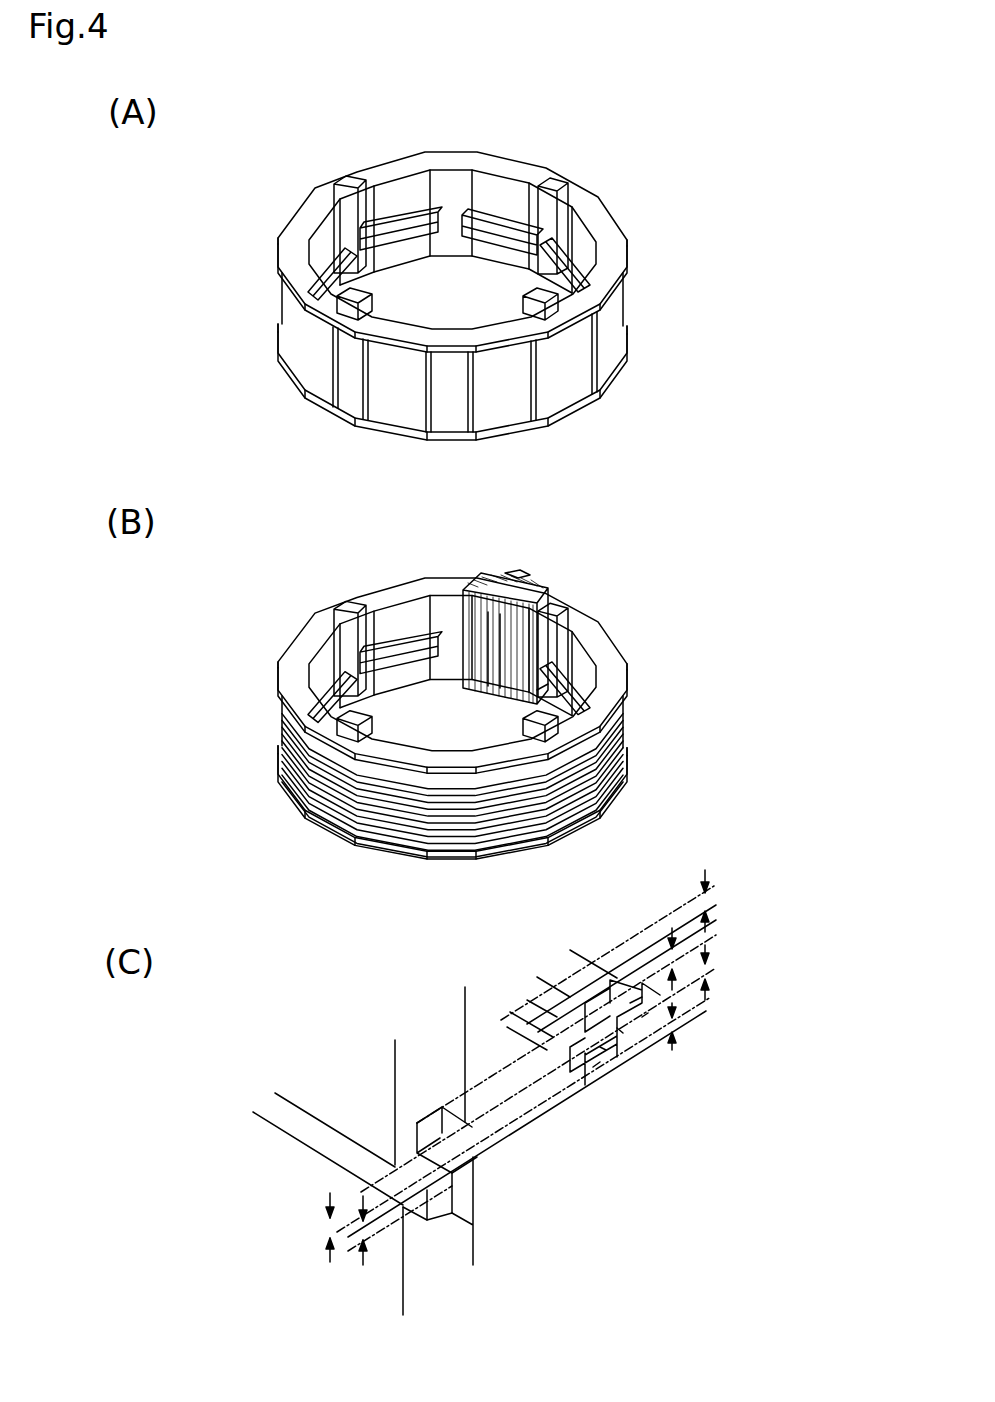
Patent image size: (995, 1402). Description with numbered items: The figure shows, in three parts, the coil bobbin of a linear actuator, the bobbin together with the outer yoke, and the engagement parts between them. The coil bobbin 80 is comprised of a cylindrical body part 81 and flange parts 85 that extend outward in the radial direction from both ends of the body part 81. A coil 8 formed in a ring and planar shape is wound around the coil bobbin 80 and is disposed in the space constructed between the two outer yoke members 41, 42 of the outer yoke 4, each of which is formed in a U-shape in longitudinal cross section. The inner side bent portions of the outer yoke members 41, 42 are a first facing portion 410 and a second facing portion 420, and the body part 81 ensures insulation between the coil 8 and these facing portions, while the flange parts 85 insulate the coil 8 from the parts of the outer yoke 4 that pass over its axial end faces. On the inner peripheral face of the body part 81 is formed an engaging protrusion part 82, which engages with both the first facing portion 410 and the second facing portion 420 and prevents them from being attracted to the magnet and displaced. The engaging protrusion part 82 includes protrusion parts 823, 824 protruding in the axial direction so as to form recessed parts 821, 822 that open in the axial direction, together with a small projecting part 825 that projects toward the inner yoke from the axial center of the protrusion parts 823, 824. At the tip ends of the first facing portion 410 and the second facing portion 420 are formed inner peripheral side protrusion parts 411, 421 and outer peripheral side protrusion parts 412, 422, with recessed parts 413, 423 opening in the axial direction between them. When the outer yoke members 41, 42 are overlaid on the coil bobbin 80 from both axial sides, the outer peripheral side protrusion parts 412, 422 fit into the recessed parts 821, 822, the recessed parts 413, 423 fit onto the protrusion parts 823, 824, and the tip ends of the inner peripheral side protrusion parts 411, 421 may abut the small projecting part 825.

The coil bobbin 80 is at (638, 216).
The flange parts 85 is at (630, 313).
The body part 81 is at (512, 371).
The engaging protrusion part 82 is at (535, 660).
The coil 8 is at (590, 788).
The outer yoke 4 is at (480, 899).
The outer yoke member 42 is at (470, 590).
The outer yoke member 41 is at (488, 640).
The first facing portion 410 is at (528, 577).
The inner peripheral side protrusion part 411 is at (395, 1138).
The outer peripheral side protrusion part 412 is at (440, 1105).
The recessed part 413 is at (430, 1115).
The second facing portion 420 is at (572, 713).
The inner peripheral side protrusion part 421 is at (480, 1239).
The outer peripheral side protrusion part 422 is at (480, 1183).
The recessed part 423 is at (480, 1212).
The recessed part 821 is at (650, 1030).
The recessed part 822 is at (662, 1040).
The protrusion part 823 is at (637, 1080).
The protrusion part 824 is at (630, 1100).
The small projecting part 825 is at (628, 1140).